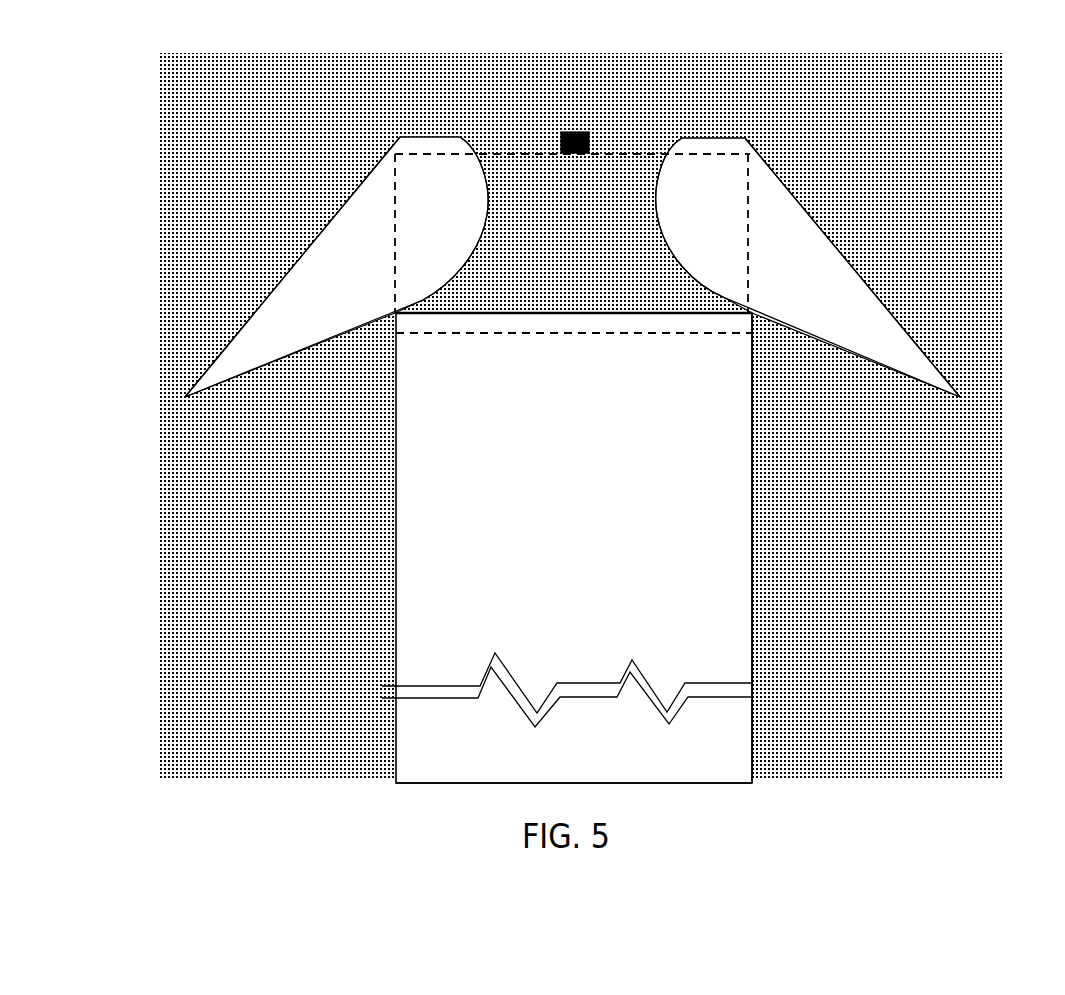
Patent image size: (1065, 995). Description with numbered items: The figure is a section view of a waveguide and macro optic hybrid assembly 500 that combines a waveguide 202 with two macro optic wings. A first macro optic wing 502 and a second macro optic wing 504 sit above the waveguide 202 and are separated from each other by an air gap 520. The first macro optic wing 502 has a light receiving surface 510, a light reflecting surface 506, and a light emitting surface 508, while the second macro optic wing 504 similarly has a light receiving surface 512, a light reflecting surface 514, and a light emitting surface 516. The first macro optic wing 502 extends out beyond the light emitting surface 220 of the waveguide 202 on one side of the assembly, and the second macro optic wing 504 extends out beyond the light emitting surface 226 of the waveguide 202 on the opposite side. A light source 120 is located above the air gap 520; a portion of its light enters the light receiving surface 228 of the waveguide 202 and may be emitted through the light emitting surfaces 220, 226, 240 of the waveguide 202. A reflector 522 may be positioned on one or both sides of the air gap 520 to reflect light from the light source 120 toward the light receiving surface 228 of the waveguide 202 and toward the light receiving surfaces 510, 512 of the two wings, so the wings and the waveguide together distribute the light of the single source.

The waveguide and macro optic hybrid assembly 500 is at (967, 118).
The light source 120 is at (585, 130).
The first macro optic wing 502 is at (350, 240).
The second macro optic wing 504 is at (793, 252).
The light reflecting surface 506 is at (377, 167).
The light emitting surface 508 is at (305, 348).
The light receiving surface 510 is at (487, 165).
The light receiving surface 512 is at (653, 183).
The light reflecting surface 514 is at (788, 175).
The light emitting surface 516 is at (823, 343).
The air gap 520 is at (573, 255).
The reflector 522 is at (394, 318).
The light emitting surface 220 is at (395, 645).
The light receiving surface 228 is at (662, 322).
The light emitting surface 226 is at (752, 635).
The light emitting surface 240 is at (640, 783).
The waveguide 202 is at (335, 692).